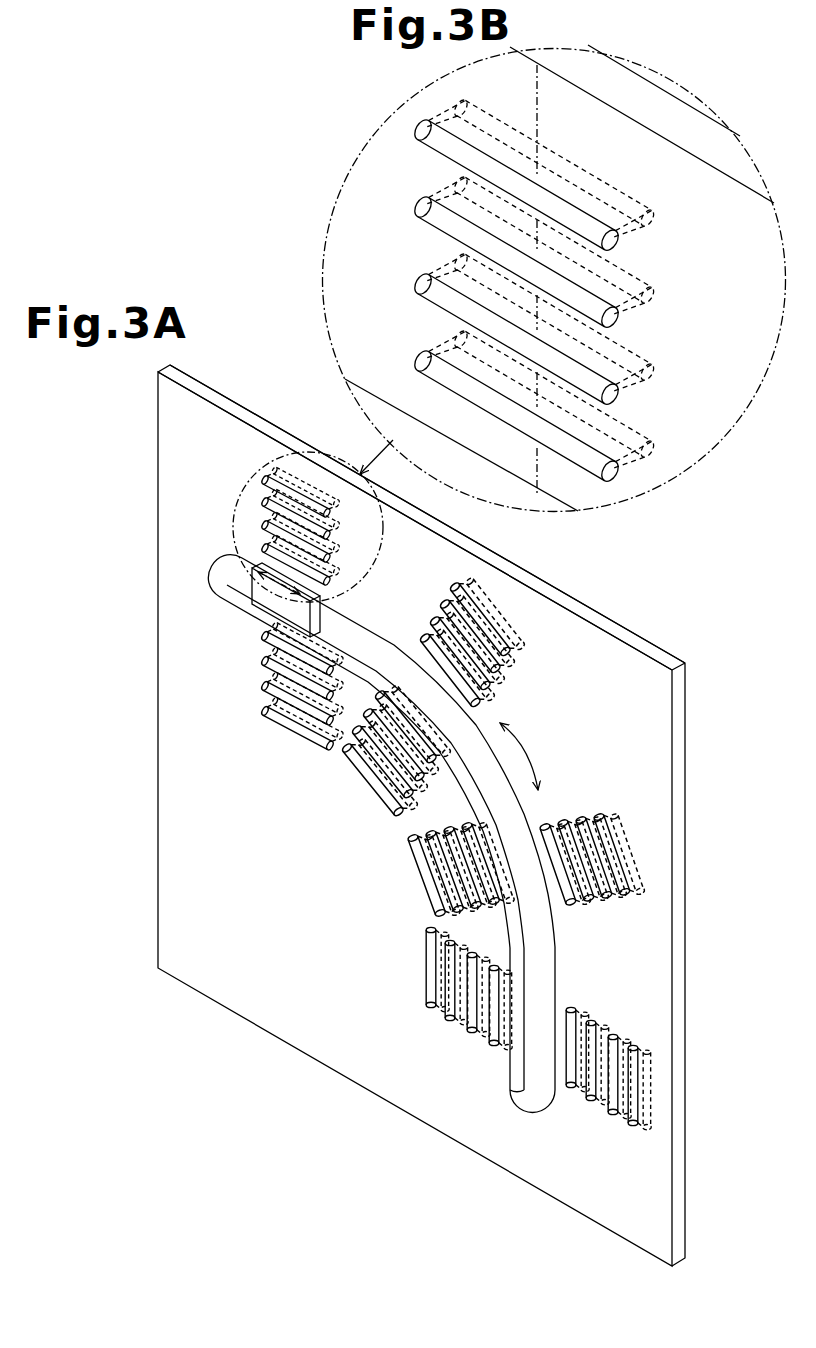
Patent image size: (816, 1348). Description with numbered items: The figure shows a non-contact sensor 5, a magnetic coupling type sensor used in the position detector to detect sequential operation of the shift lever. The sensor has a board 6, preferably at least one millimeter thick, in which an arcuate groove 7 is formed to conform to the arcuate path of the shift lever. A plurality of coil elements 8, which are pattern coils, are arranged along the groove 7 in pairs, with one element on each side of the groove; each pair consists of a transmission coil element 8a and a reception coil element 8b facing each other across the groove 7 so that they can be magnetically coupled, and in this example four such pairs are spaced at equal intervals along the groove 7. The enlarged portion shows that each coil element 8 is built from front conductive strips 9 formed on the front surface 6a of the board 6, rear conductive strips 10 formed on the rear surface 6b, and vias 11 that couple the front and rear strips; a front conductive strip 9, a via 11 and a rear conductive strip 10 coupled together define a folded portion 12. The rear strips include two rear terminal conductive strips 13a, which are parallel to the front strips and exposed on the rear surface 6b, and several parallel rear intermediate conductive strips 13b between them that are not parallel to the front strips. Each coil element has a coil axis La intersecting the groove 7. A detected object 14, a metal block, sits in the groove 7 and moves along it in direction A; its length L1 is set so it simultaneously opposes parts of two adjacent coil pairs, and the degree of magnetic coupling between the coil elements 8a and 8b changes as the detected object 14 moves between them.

In FIG. 3A, the non-contact sensor 5 is at (232, 470).
In FIG. 3A, the board 6 is at (198, 384).
In FIG. 3A, the front surface 6a is at (232, 420).
In FIG. 3A, the rear surface 6b is at (283, 442).
In FIG. 3A, the groove 7 is at (367, 636).
In FIG. 3A, the coil element 8 is at (430, 640).
In FIG. 3B, the coil element 8 is at (452, 385).
In FIG. 3A, the transmission coil element 8a is at (262, 548).
In FIG. 3A, the reception coil element 8b is at (266, 642).
In FIG. 3B, the front conductive strip 9 is at (497, 205).
In FIG. 3B, the rear conductive strip 10 is at (543, 140).
In FIG. 3B, the via 11 is at (428, 112).
In FIG. 3B, the folded portion 12 is at (440, 158).
In FIG. 3B, the rear terminal conductive strip 13a is at (512, 136).
In FIG. 3B, the rear intermediate conductive strip 13b is at (582, 195).
In FIG. 3A, the detected object 14 is at (248, 588).
In FIG. 3A, the length L1 is at (262, 614).
In FIG. 3A, the direction A is at (525, 750).
In FIG. 3B, the coil axis La is at (540, 93).